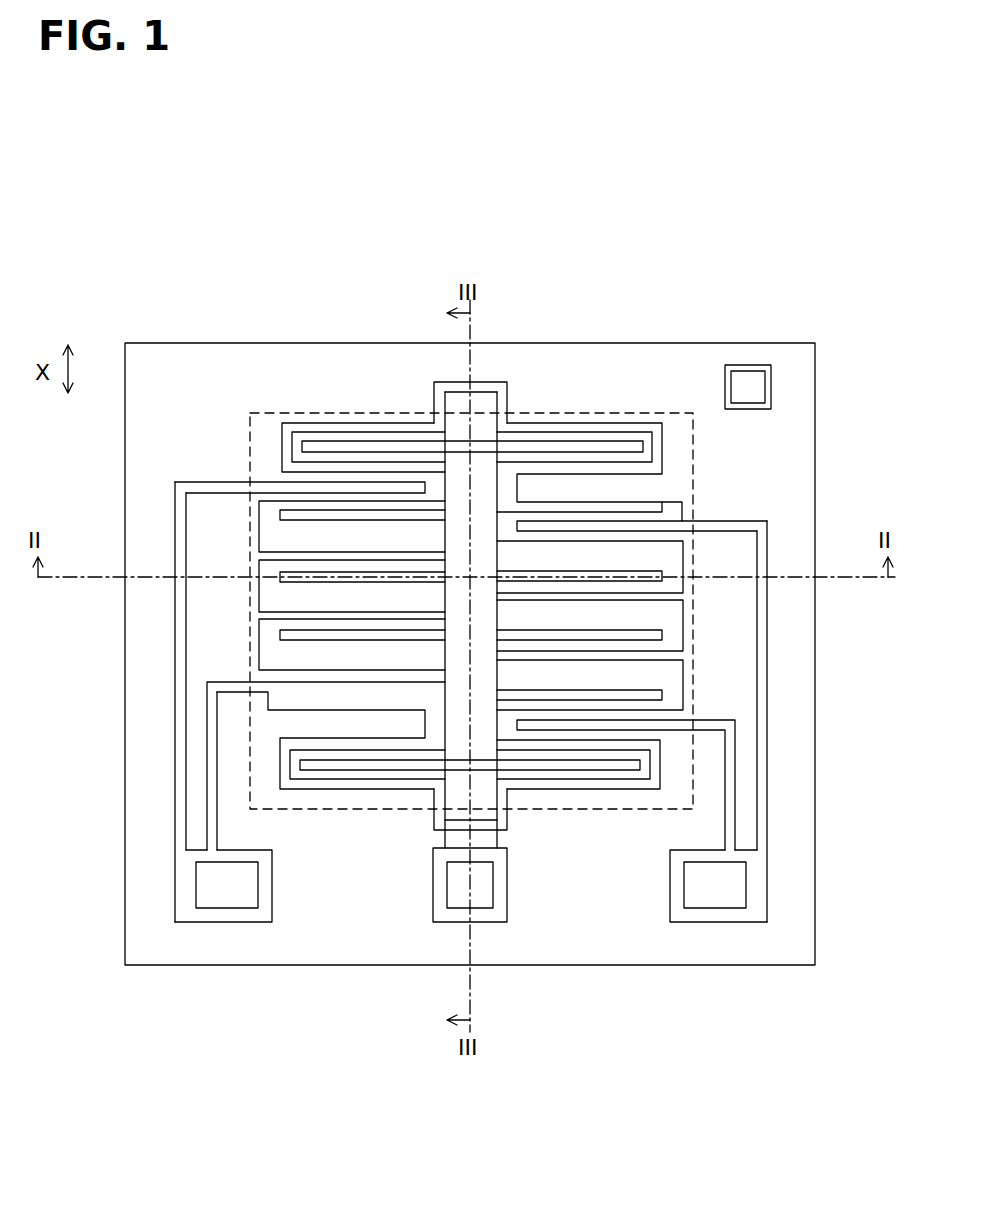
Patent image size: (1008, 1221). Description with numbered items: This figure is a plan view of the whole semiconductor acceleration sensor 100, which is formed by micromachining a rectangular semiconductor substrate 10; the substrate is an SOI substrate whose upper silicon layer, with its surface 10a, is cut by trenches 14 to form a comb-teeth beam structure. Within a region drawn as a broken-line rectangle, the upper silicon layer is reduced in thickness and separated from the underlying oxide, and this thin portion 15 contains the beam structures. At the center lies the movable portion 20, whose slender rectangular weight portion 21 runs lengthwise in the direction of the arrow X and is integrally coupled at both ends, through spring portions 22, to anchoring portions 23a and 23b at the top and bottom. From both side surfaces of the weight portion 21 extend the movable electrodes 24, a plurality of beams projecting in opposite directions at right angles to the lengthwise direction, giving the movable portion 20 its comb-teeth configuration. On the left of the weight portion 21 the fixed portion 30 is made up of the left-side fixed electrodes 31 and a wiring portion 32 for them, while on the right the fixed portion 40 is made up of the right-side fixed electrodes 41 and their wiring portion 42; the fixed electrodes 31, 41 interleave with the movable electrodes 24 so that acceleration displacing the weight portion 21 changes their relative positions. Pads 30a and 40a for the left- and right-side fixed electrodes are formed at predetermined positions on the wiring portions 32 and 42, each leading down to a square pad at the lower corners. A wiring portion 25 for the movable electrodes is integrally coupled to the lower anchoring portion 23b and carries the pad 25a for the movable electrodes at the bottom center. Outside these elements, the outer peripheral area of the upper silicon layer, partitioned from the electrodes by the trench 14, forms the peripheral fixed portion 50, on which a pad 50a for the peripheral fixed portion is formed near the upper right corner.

The semiconductor acceleration sensor 100 is at (197, 337).
The semiconductor substrate 10 is at (704, 340).
The substrate surface 10a is at (785, 695).
The trench 14 is at (768, 752).
The thin portion 15 is at (693, 440).
The movable portion 20 is at (418, 656).
The weight portion 21 is at (455, 548).
The spring portion 22 is at (575, 437).
The anchoring portion 23a is at (455, 397).
The anchoring portion 23b is at (455, 823).
The movable electrode 24 is at (615, 515).
The wiring portion for movable electrodes 25 is at (504, 932).
The pad for movable electrodes 25a is at (468, 882).
The fixed portion 30 is at (257, 749).
The pad for left-side fixed electrodes 30a is at (212, 893).
The fixed electrode 31 is at (345, 675).
The wiring portion for left-side fixed electrodes 32 is at (200, 555).
The fixed portion 40 is at (692, 769).
The pad for right-side fixed electrodes 40a is at (725, 893).
The fixed electrode 41 is at (615, 538).
The wiring portion for right-side fixed electrodes 42 is at (705, 645).
The peripheral fixed portion 50 is at (788, 472).
The pad for peripheral fixed portion 50a is at (760, 385).